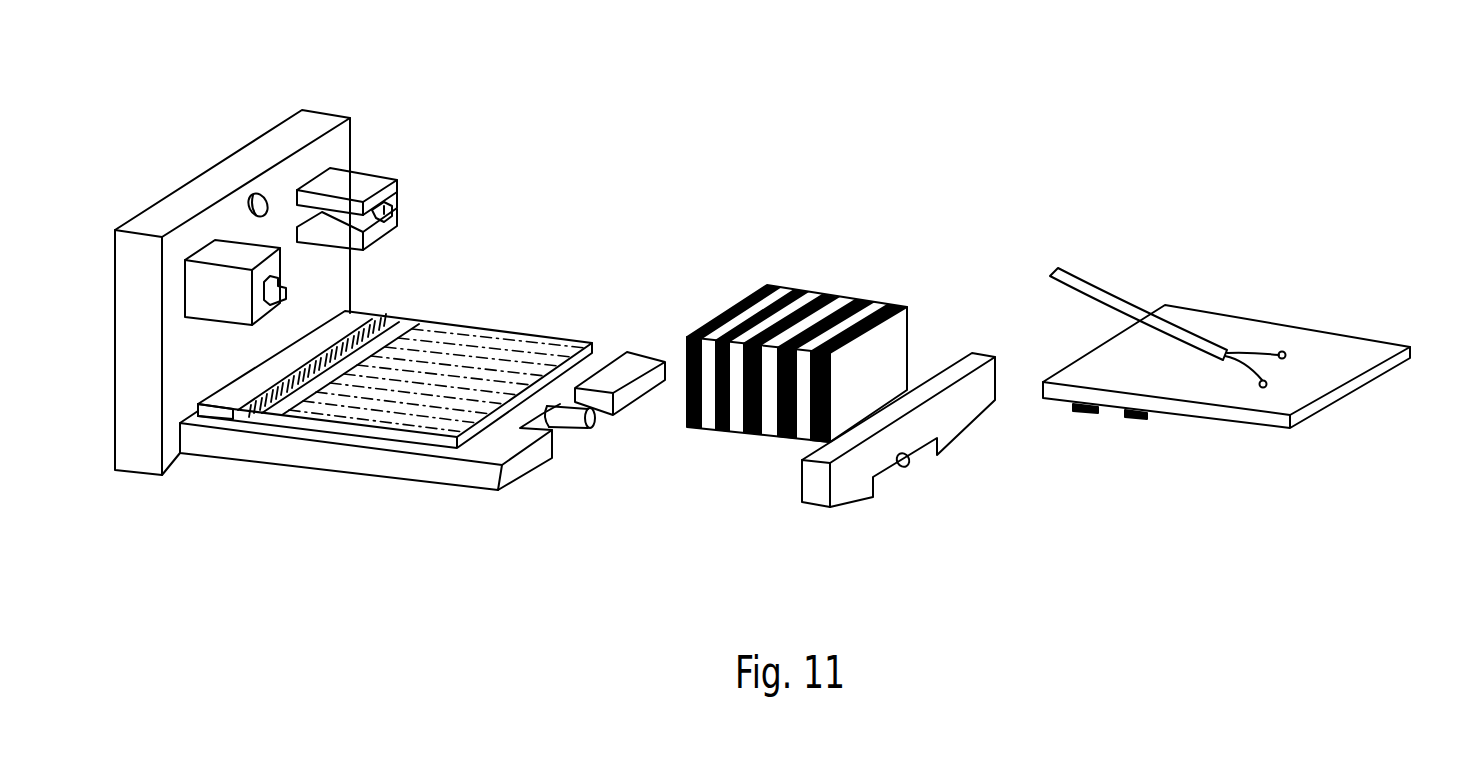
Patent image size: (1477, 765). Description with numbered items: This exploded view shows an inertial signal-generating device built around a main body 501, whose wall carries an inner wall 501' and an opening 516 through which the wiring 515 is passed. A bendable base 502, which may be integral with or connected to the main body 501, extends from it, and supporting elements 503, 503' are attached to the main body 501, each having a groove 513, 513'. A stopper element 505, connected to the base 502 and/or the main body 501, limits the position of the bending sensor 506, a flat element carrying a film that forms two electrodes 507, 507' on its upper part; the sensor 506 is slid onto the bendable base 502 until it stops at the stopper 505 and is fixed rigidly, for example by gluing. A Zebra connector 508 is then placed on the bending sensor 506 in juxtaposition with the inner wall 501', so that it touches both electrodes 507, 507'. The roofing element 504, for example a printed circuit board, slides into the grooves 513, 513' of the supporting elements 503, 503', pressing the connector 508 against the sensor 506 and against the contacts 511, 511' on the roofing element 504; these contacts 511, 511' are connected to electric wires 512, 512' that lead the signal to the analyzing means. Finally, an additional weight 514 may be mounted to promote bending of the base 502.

The main body 501 is at (201, 292).
The inner wall 501' is at (115, 311).
The bendable base 502 is at (442, 470).
The supporting element 503 is at (383, 186).
The supporting element 503' is at (199, 224).
The roofing element 504 is at (1350, 333).
The stopper element 505 is at (210, 414).
The bending sensor 506 is at (397, 392).
The electrode 507 is at (395, 343).
The electrode 507' is at (440, 335).
The Zebra connector 508 is at (822, 289).
The contact 511 is at (1051, 450).
The contact 511' is at (1116, 457).
The electric wire 512 is at (1228, 427).
The electric wire 512' is at (1304, 403).
The groove 513 is at (442, 206).
The groove 513' is at (182, 406).
The weight 514 is at (983, 377).
The wiring 515 is at (1058, 272).
The opening 516 is at (258, 194).